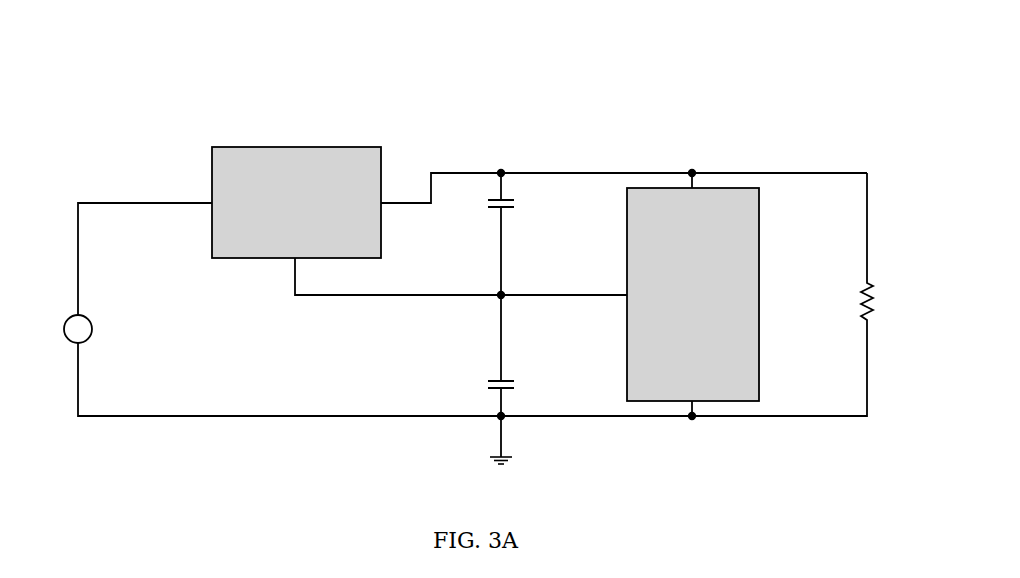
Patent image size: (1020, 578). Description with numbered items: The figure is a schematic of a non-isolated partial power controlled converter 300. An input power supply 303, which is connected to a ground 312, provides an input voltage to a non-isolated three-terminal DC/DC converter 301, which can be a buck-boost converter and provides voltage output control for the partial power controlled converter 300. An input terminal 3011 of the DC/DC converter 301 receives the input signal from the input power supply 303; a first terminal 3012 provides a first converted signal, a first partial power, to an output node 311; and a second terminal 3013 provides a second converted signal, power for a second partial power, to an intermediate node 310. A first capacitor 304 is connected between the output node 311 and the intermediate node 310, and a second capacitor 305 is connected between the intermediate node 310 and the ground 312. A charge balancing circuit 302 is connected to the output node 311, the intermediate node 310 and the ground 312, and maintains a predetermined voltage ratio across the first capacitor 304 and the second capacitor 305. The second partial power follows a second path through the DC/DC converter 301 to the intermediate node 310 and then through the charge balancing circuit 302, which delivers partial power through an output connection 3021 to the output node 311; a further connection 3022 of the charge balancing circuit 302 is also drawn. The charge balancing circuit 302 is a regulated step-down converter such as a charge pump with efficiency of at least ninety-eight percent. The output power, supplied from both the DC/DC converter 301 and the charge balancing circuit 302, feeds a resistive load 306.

The non-isolated partial power controlled converter 300 is at (158, 102).
The non-isolated 3-terminal DC/DC converter 301 is at (293, 147).
The input terminal 3011 is at (210, 201).
The first terminal 3012 is at (381, 202).
The second terminal 3013 is at (295, 260).
The charge balancing circuit 302 is at (762, 287).
The output connection 3021 is at (690, 188).
The second terminal of charge balancing circuit 3022 is at (626, 296).
The input power supply 303 is at (67, 315).
The first capacitor 304 is at (513, 210).
The second capacitor 305 is at (497, 373).
The resistive load 306 is at (873, 318).
The intermediate node 310 is at (503, 297).
The output node 311 is at (504, 172).
The ground 312 is at (508, 455).